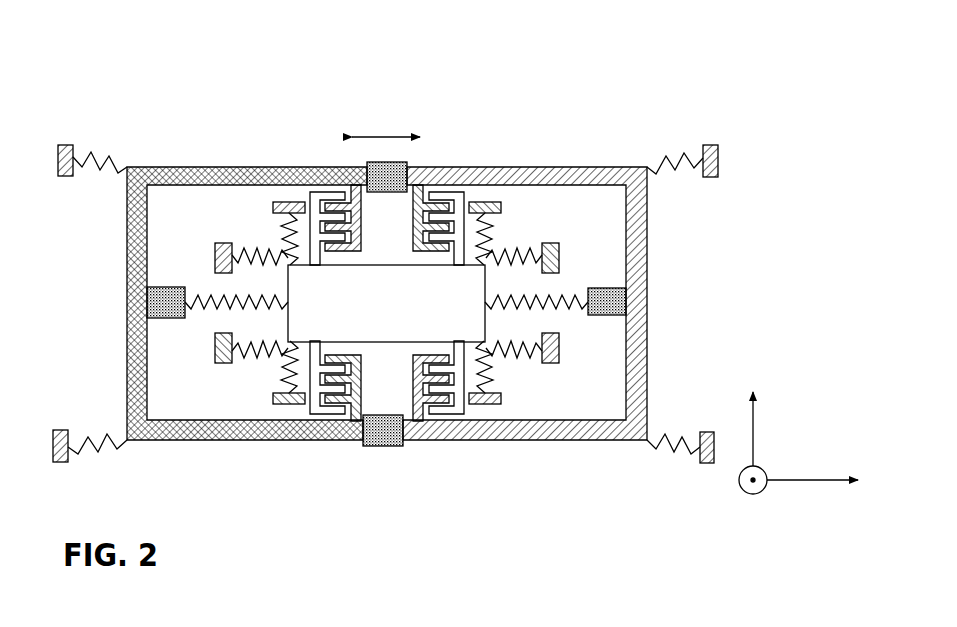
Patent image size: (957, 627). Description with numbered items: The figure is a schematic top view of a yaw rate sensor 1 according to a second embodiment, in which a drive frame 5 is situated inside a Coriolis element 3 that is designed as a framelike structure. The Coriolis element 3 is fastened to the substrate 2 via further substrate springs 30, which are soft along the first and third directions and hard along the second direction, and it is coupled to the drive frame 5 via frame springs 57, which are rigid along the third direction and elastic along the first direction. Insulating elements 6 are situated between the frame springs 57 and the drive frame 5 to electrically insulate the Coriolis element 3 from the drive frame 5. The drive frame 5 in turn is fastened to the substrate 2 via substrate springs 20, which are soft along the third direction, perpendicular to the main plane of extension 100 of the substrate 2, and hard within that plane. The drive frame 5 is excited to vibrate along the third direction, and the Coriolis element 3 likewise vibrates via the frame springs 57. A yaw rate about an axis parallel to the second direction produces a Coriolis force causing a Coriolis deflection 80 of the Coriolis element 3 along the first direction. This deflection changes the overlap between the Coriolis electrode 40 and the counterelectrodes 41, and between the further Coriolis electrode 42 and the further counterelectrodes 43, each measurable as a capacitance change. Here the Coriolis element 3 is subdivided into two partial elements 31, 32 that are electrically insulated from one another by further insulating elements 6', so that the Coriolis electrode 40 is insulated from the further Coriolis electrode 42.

The yaw rate sensor 1 is at (712, 120).
The substrate 2 is at (786, 282).
The Coriolis element 3 is at (647, 238).
The drive frame 5 is at (303, 323).
The insulating element 6 is at (653, 285).
The further insulating element 6' is at (428, 147).
The substrate spring 20 is at (487, 232).
The further substrate spring 30 is at (662, 452).
The partial element 31 is at (235, 167).
The partial element 32 is at (540, 167).
The Coriolis electrode 40 is at (340, 418).
The counterelectrode 41 is at (295, 404).
The further Coriolis electrode 42 is at (414, 420).
The further counterelectrode 43 is at (467, 404).
The frame spring 57 is at (590, 319).
The Coriolis deflection 80 is at (389, 137).
The main plane of extension 100 is at (830, 446).